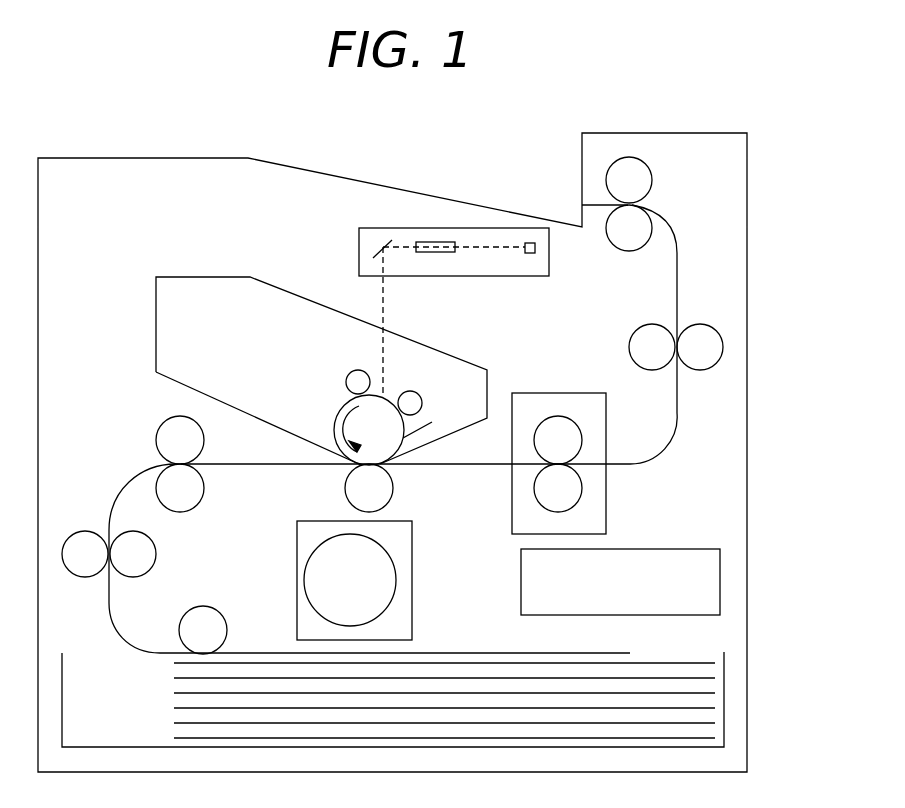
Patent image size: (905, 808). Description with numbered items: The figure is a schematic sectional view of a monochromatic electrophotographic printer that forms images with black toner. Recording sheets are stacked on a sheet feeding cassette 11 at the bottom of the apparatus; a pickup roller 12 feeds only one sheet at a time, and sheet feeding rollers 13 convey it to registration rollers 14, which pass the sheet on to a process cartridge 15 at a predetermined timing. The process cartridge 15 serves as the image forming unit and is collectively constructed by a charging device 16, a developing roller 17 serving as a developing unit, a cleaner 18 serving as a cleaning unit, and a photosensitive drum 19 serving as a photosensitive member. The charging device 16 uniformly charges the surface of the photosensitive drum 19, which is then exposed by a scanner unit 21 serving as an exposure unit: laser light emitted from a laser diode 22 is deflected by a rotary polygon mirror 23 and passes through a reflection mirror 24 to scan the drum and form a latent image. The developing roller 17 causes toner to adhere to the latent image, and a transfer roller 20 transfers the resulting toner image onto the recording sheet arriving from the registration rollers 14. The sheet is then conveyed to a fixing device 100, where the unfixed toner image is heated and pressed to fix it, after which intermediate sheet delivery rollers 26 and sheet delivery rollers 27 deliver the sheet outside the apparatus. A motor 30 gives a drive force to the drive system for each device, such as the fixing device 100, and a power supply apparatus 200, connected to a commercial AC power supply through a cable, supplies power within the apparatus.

The sheet feeding cassette 11 is at (724, 692).
The pickup roller 12 is at (184, 640).
The sheet feeding rollers 13 is at (83, 578).
The registration rollers 14 is at (160, 430).
The process cartridge 15 is at (205, 276).
The charging device 16 is at (413, 391).
The developing roller 17 is at (347, 373).
The cleaner 18 is at (417, 433).
The photosensitive drum 19 is at (334, 419).
The transfer roller 20 is at (393, 497).
The scanner unit 21 is at (358, 245).
The laser diode 22 is at (530, 240).
The rotary polygon mirror 23 is at (436, 242).
The reflection mirror 24 is at (376, 254).
The intermediate sheet delivery rollers 26 is at (640, 331).
The sheet delivery rollers 27 is at (652, 178).
The motor 30 is at (412, 595).
The fixing device 100 is at (553, 393).
The power supply apparatus 200 is at (652, 549).